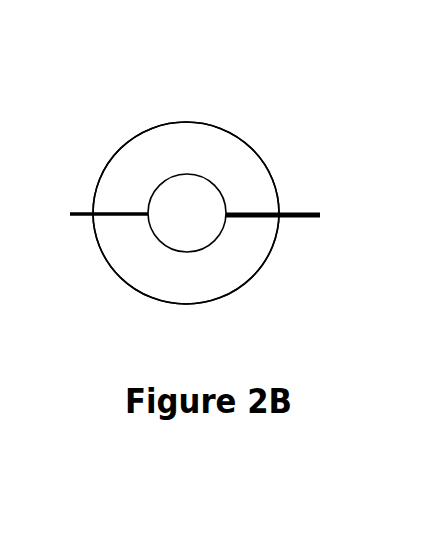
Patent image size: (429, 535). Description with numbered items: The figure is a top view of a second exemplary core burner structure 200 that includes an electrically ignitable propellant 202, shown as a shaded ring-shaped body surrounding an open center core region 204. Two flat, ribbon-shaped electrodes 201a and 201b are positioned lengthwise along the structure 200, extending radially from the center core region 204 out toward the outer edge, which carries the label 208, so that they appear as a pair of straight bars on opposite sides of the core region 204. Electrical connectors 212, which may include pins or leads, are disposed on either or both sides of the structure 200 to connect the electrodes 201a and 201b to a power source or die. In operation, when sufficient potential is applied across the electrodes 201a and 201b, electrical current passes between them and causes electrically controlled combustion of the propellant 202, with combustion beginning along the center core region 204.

The core burner structure 200 is at (165, 90).
The electrically ignitable propellant 202 is at (260, 243).
The center core region 204 is at (185, 230).
The outer surface 208 is at (247, 142).
The electrical connectors 212 is at (222, 164).
The electrode 201a is at (122, 214).
The electrode 201b is at (267, 210).